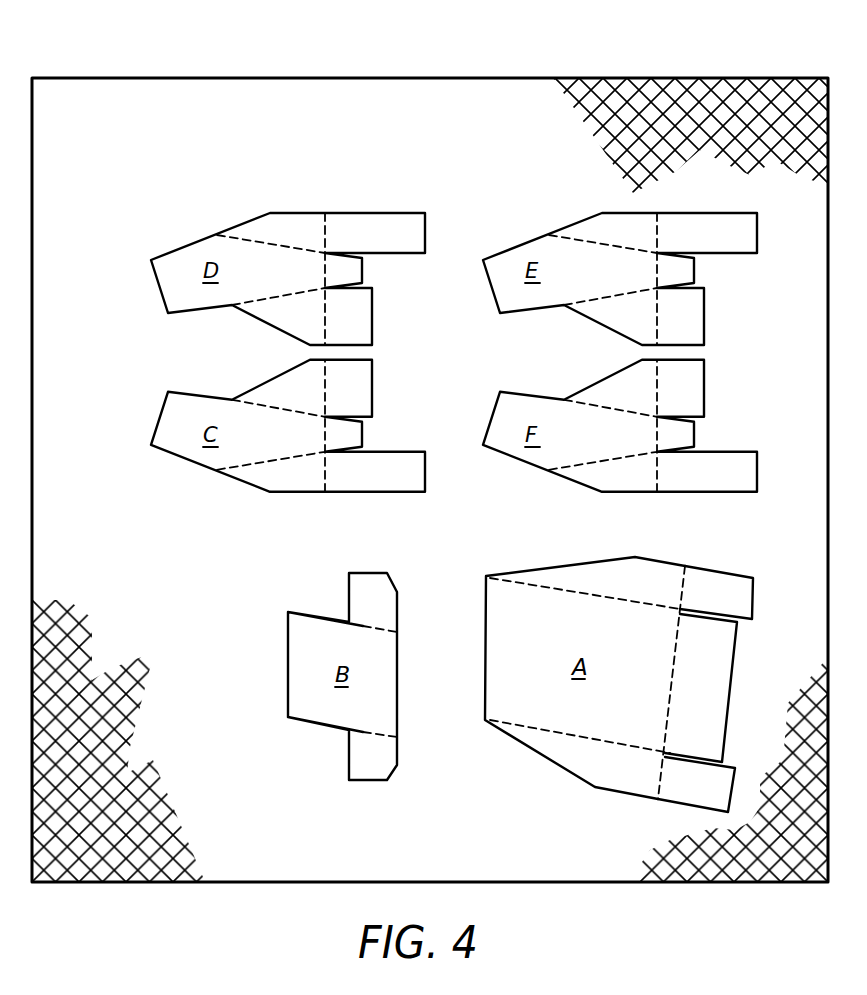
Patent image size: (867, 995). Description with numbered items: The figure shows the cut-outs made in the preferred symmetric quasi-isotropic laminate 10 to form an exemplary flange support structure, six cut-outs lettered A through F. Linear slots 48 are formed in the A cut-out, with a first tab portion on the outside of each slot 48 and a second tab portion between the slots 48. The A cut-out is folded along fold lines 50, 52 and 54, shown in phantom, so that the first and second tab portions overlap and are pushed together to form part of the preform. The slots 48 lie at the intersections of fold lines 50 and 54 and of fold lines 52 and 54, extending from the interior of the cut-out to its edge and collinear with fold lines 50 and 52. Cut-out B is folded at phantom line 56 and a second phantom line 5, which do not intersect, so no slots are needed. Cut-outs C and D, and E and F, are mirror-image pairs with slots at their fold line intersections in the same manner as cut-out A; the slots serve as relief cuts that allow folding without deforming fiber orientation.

The symmetric quasi-isotropic laminate 10 is at (440, 78).
The slots 48 is at (713, 620).
The fold line 50 is at (565, 735).
The fold line 52 is at (552, 588).
The fold line 54 is at (670, 700).
The phantom line 56 is at (375, 622).
The fold line 5 is at (370, 733).